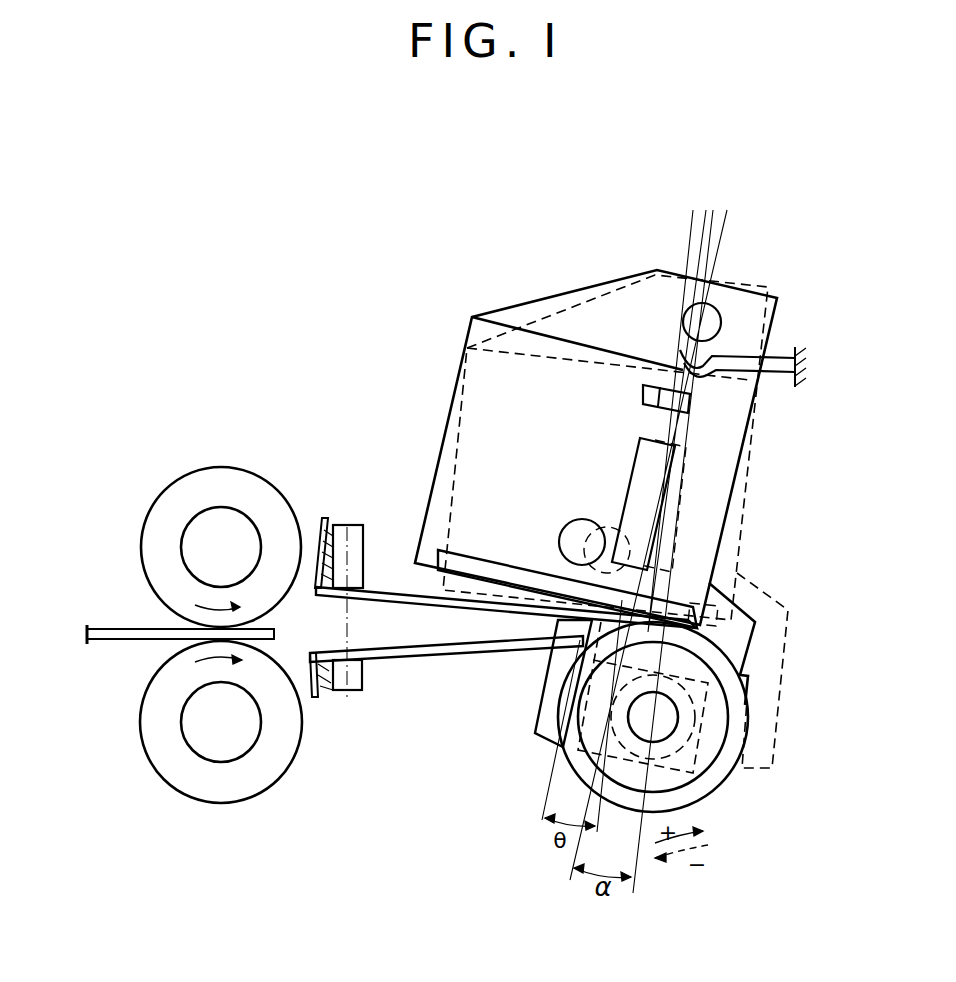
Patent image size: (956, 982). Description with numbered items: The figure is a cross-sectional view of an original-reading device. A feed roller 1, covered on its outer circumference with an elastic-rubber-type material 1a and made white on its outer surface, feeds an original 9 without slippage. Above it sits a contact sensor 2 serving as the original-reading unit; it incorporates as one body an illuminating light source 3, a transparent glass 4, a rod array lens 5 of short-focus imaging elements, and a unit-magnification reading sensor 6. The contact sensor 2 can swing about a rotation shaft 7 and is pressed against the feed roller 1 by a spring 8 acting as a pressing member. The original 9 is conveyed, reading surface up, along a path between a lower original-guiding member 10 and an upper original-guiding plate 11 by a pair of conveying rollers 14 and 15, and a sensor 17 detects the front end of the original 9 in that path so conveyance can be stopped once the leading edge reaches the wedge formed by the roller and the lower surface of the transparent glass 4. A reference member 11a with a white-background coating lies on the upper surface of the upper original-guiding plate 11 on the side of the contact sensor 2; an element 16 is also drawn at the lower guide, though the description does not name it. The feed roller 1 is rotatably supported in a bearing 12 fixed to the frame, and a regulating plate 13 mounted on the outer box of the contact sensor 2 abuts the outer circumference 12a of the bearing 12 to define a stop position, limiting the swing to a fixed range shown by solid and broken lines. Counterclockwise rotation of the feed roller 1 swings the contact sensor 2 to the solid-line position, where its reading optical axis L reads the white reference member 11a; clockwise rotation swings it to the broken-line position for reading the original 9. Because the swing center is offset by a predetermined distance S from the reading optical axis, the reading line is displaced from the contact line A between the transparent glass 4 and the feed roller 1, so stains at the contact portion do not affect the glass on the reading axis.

The feed roller 1 is at (717, 733).
The elastic-rubber-type material 1a is at (737, 763).
The contact sensor 2 is at (490, 395).
The illuminating light source 3 is at (584, 521).
The transparent glass 4 is at (480, 568).
The rod array lens 5 is at (636, 455).
The unit-magnification reading sensor 6 is at (640, 393).
The rotation shaft 7 is at (715, 320).
The spring 8 is at (776, 358).
The original 9 is at (121, 628).
The lower original-guiding member 10 is at (418, 660).
The upper original-guiding plate 11 is at (399, 590).
The reference member 11a is at (612, 613).
The bearing 12 is at (673, 750).
The outer circumference of the bearing 12a is at (708, 733).
The regulating plate 13 is at (545, 740).
The conveying roller 14 is at (223, 800).
The conveying roller 15 is at (240, 470).
The lower bracket 16 is at (327, 622).
The sensor 17 is at (346, 528).
The predetermined distance S is at (686, 195).
The contact line A is at (672, 636).
The reading optical axis L is at (660, 518).